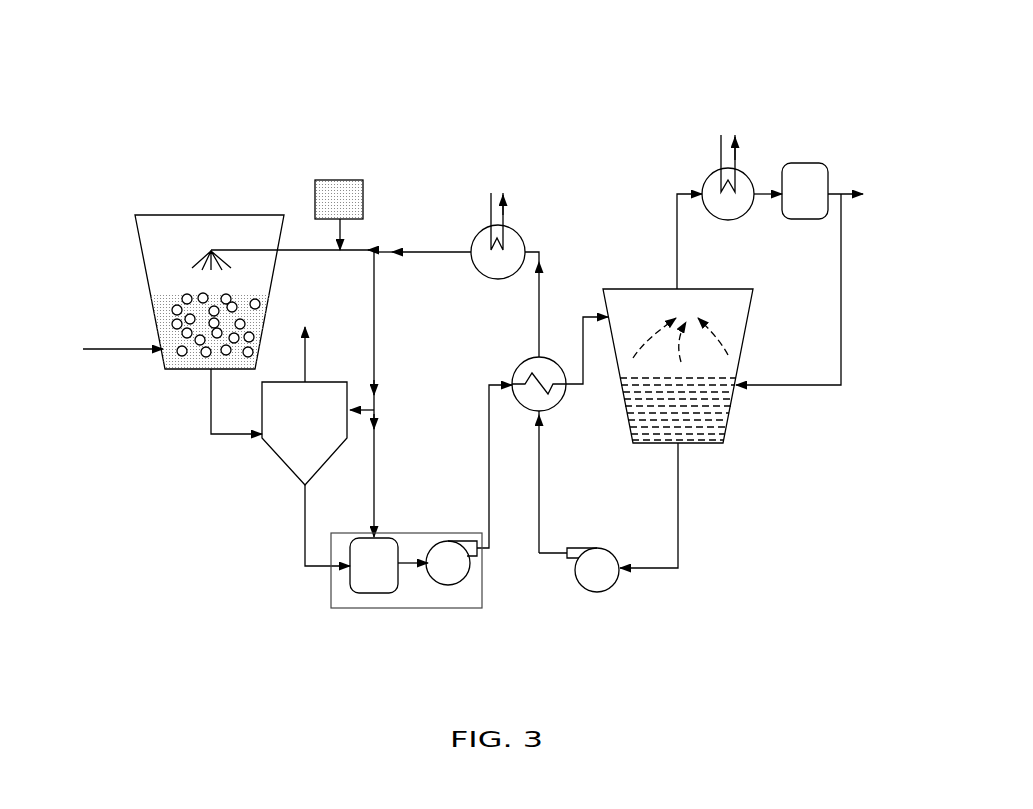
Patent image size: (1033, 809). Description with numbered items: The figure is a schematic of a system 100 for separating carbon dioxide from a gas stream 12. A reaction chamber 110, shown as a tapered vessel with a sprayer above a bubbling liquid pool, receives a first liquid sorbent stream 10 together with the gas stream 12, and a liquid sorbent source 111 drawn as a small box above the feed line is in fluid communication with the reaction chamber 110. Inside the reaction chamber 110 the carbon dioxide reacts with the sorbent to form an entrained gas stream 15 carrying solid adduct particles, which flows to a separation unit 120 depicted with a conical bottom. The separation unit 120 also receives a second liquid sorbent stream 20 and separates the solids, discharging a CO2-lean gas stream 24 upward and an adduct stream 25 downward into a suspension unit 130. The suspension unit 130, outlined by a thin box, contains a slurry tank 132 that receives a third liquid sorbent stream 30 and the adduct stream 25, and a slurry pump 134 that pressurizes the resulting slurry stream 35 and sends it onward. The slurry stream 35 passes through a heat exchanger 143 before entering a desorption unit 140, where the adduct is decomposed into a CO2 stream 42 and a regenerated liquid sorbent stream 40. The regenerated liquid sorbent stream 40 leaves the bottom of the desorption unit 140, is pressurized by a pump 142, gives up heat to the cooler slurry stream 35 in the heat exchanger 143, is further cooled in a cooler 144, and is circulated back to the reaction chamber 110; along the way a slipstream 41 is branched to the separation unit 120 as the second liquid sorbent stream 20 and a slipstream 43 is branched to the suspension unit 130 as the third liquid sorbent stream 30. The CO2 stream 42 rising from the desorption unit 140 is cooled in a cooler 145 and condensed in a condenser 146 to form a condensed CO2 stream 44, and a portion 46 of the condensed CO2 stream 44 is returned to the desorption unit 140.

The system 100 is at (729, 56).
The reaction chamber 110 is at (193, 213).
The liquid sorbent source 111 is at (338, 180).
The gas stream 12 is at (93, 348).
The first liquid sorbent stream 10 is at (302, 252).
The regenerated liquid sorbent stream 40 is at (368, 250).
The cooler 144 is at (479, 236).
The cooler 145 is at (708, 180).
The condenser 146 is at (804, 163).
The condensed CO2 stream 44 is at (848, 190).
The desorption unit 140 is at (641, 289).
The CO2 stream 42 is at (678, 263).
The portion of the condensed CO2 stream 46 is at (841, 270).
The heat exchanger 143 is at (520, 369).
The slurry stream 35 is at (572, 394).
The CO2-lean gas stream 24 is at (307, 337).
The second liquid sorbent stream 20 is at (350, 406).
The slipstream 41 is at (376, 393).
The slipstream 43 is at (376, 425).
The entrained gas stream 15 is at (208, 422).
The separation unit 120 is at (280, 460).
The third liquid sorbent stream 30 is at (377, 521).
The adduct stream 25 is at (302, 560).
The suspension unit 130 is at (331, 604).
The slurry tank 132 is at (373, 594).
The slurry pump 134 is at (450, 585).
The pump 142 is at (614, 590).